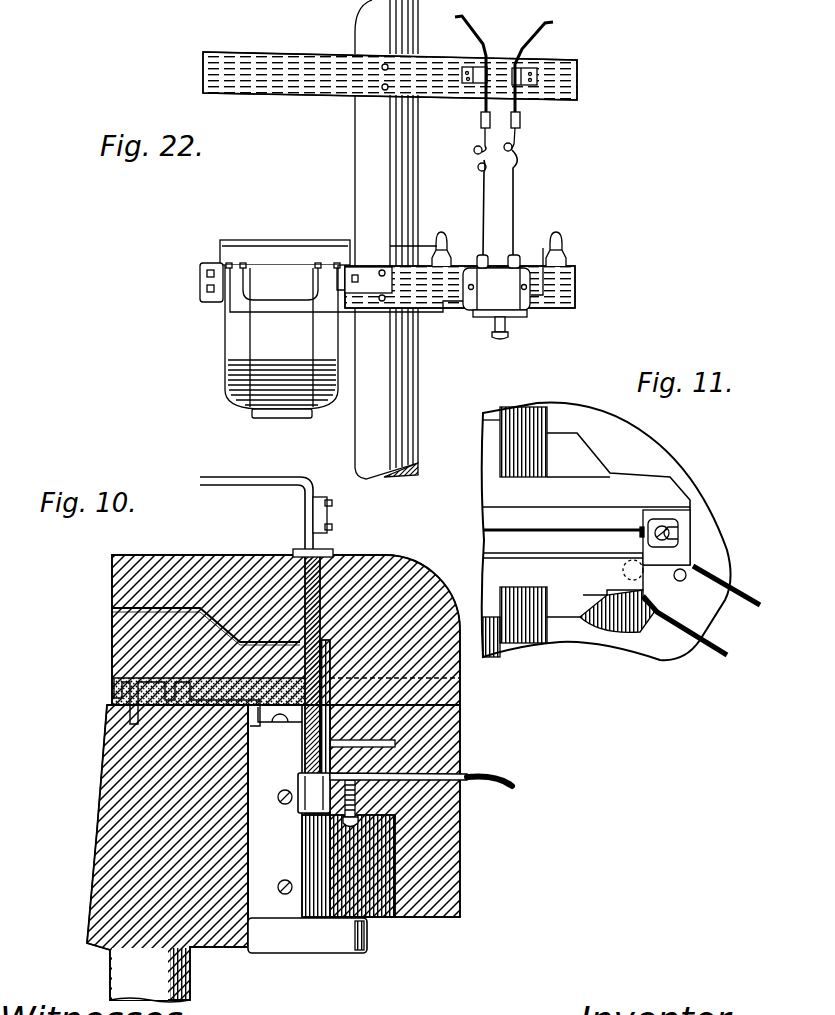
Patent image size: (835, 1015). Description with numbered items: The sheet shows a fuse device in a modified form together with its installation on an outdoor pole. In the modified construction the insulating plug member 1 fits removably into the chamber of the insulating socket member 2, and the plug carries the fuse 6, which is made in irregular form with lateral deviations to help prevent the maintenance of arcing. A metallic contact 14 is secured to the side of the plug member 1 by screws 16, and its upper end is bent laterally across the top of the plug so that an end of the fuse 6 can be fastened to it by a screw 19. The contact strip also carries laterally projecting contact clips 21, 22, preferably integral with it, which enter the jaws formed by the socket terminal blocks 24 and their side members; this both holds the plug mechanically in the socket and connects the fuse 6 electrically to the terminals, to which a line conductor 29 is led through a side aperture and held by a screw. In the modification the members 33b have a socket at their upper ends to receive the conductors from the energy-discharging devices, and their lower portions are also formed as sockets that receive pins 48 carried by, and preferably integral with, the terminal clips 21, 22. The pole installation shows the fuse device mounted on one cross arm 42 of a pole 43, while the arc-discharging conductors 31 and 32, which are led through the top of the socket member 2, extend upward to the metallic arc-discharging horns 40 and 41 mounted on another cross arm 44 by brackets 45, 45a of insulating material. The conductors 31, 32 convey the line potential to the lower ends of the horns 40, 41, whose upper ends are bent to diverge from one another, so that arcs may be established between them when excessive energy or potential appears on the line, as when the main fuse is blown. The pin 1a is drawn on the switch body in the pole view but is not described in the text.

In FIG. 22, the plug member 1 is at (520, 316).
In FIG. 11, the plug member 1 is at (670, 465).
In FIG. 10, the plug member 1 is at (272, 944).
In FIG. 22, the pin 1a is at (492, 324).
In FIG. 22, the socket member 2 is at (527, 311).
In FIG. 10, the socket member 2 is at (458, 900).
In FIG. 11, the fuse 6 is at (548, 530).
In FIG. 10, the metallic contact 14 is at (321, 811).
In FIG. 10, the screw 16 is at (285, 790).
In FIG. 11, the screw 19 is at (678, 523).
In FIG. 11, the contact clip 21 is at (747, 607).
In FIG. 11, the contact clip 22 is at (723, 658).
In FIG. 10, the metallic block 24 is at (341, 822).
In FIG. 10, the conductor 29 is at (468, 775).
In FIG. 22, the conductor 31 is at (520, 163).
In FIG. 10, the conductor 31 is at (294, 484).
In FIG. 22, the conductor 32 is at (478, 167).
In FIG. 10, the member 33b is at (327, 563).
In FIG. 22, the arc discharging device 40 is at (540, 34).
In FIG. 22, the arc discharging device 41 is at (468, 34).
In FIG. 22, the cross arm 42 is at (575, 279).
In FIG. 22, the pole 43 is at (407, 137).
In FIG. 22, the cross arm 44 is at (563, 64).
In FIG. 22, the bracket 45 is at (462, 72).
In FIG. 22, the clip 45a is at (533, 87).
In FIG. 11, the pin 48 is at (680, 580).
In FIG. 10, the pin 48 is at (460, 680).